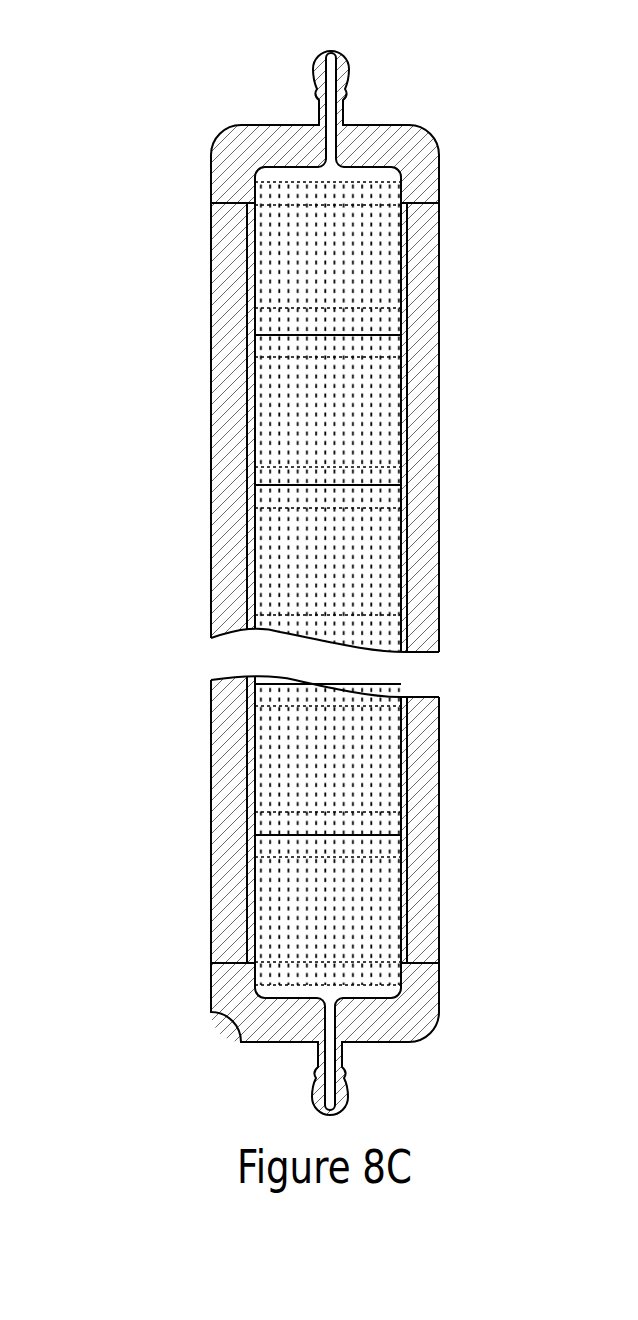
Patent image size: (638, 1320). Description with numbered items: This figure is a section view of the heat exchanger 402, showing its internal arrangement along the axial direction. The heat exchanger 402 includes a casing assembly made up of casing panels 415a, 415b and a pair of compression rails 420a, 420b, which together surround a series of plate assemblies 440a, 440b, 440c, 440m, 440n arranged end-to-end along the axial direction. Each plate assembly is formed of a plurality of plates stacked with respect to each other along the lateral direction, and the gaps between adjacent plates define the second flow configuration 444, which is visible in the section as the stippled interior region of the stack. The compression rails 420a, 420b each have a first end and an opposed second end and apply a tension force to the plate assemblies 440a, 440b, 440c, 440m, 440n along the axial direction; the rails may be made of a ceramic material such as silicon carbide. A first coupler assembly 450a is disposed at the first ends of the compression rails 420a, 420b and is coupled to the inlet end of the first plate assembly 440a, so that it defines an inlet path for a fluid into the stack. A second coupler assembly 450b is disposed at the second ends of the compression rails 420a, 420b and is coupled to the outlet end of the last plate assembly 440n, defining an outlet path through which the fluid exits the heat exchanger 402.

The heat exchanger 402 is at (138, 118).
The second flow configuration 444 is at (282, 165).
The first coupler assembly 450a is at (401, 132).
The second coupler assembly 450b is at (424, 996).
The compression rail 420a is at (211, 222).
The compression rail 420b is at (432, 232).
The casing panel 415a is at (246, 838).
The casing panel 415b is at (406, 848).
The plate assembly 440a is at (283, 268).
The plate assembly 440b is at (283, 413).
The plate assembly 440c is at (285, 560).
The plate assembly 440m is at (292, 782).
The plate assembly 440n is at (281, 910).